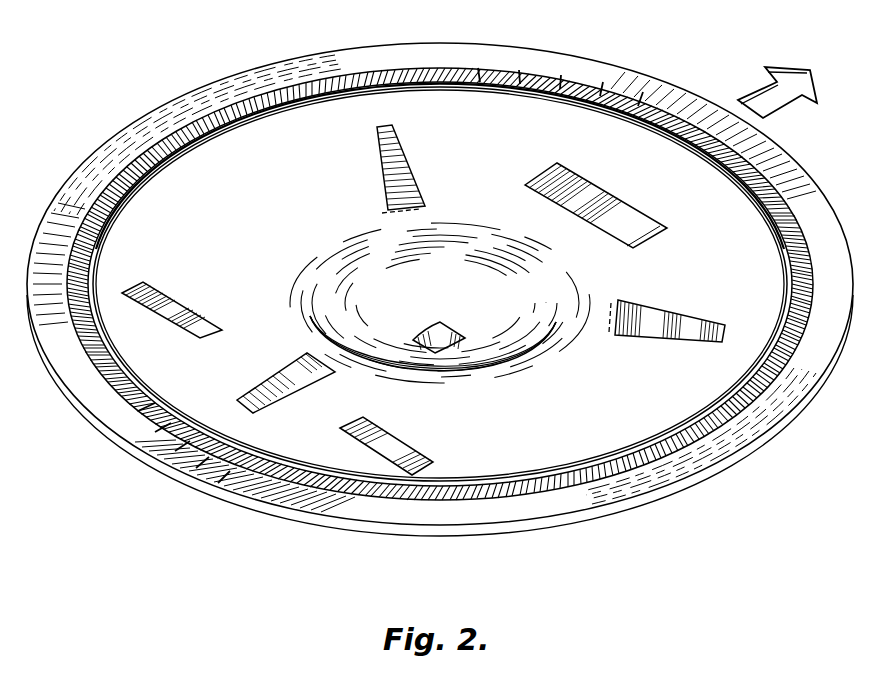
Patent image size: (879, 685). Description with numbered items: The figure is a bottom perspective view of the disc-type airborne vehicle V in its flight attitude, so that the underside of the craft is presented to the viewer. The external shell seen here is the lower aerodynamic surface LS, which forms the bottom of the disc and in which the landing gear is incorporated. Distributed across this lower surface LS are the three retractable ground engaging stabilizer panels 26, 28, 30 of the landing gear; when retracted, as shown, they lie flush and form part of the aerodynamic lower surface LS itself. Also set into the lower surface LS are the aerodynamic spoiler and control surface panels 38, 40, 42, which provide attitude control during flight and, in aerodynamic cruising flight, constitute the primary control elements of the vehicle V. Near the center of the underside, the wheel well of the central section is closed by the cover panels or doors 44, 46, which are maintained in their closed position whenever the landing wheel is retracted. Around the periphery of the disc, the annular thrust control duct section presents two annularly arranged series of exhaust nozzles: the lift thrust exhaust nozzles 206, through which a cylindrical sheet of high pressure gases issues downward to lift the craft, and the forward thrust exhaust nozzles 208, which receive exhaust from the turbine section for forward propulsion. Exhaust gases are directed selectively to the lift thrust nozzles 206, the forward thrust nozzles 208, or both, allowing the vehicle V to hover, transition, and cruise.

The retractable ground engaging stabilizer panel 26 is at (397, 150).
The retractable ground engaging stabilizer panel 28 is at (682, 333).
The retractable ground engaging stabilizer panel 30 is at (267, 400).
The aerodynamic spoiler and control surface panel 38 is at (627, 210).
The aerodynamic spoiler and control surface panel 40 is at (190, 315).
The aerodynamic spoiler and control surface panel 42 is at (418, 457).
The cover panel 44 is at (428, 334).
The cover panel 46 is at (447, 347).
The lift thrust exhaust nozzles 206 is at (302, 470).
The forward thrust exhaust nozzles 208 is at (253, 468).
The lower aerodynamic surface LS is at (707, 293).
The disc-type airborne vehicle V is at (655, 42).